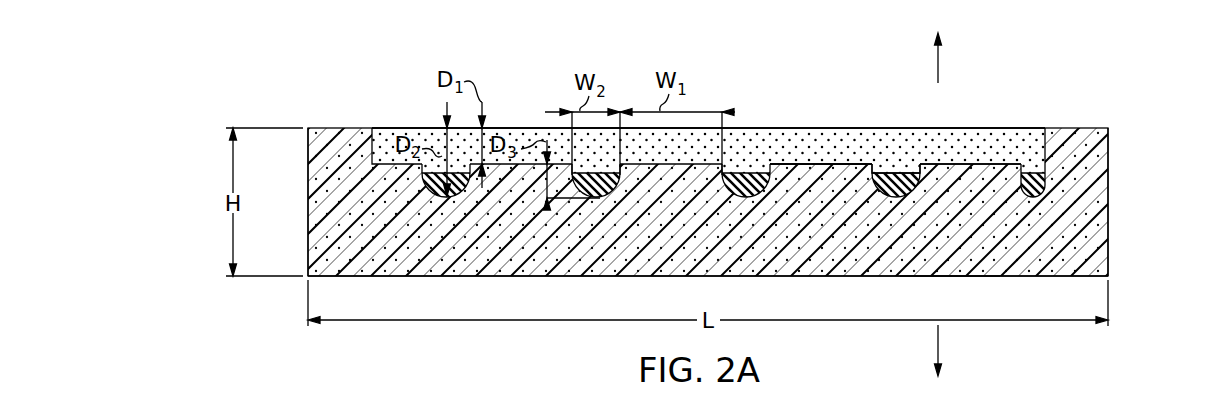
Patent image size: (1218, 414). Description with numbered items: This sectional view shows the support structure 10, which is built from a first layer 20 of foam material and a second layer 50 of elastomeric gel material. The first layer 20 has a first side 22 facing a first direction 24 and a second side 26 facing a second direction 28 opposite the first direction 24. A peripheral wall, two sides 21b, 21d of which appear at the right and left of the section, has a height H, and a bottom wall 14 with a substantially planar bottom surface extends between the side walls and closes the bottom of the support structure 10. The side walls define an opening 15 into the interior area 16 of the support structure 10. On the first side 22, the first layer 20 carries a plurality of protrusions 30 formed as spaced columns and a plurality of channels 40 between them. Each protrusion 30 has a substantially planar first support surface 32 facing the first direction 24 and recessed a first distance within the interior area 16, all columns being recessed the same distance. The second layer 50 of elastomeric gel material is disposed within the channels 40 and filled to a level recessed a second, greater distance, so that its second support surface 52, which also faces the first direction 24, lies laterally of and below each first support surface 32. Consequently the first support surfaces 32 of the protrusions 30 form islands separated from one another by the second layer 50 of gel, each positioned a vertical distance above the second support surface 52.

The support structure 10 is at (306, 78).
The bottom wall 14 is at (745, 278).
The opening 15 is at (642, 64).
The interior area 16 is at (527, 114).
The first layer of foam material 20 is at (1124, 187).
The side of peripheral wall 21b is at (1108, 240).
The side of peripheral wall 21d is at (308, 240).
The first side 22 is at (957, 144).
The first direction 24 is at (938, 56).
The second side 26 is at (955, 291).
The second direction 28 is at (938, 348).
The protrusions 30 is at (790, 163).
The first support surface 32 is at (847, 152).
The channels 40 is at (745, 188).
The second layer of elastomeric gel material 50 is at (728, 170).
The second support surface 52 is at (890, 160).